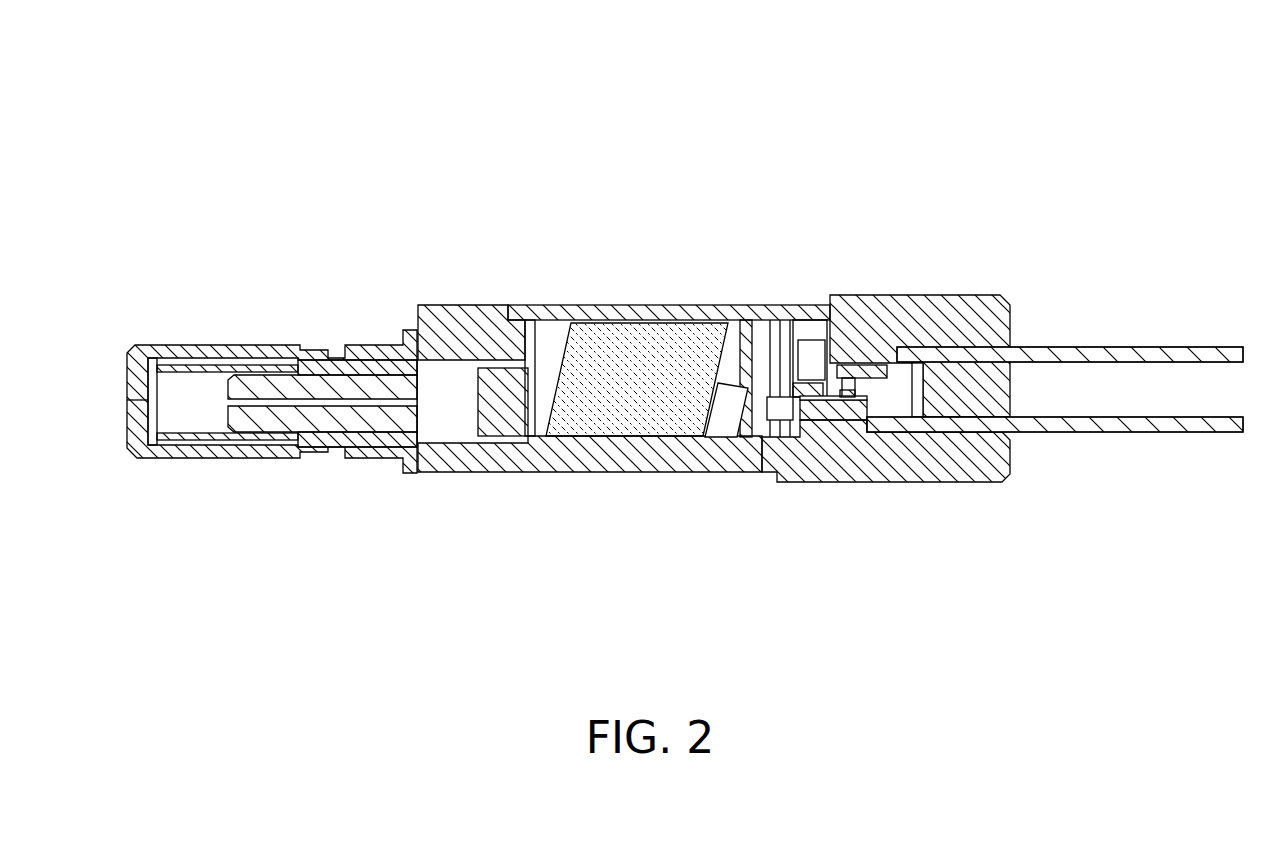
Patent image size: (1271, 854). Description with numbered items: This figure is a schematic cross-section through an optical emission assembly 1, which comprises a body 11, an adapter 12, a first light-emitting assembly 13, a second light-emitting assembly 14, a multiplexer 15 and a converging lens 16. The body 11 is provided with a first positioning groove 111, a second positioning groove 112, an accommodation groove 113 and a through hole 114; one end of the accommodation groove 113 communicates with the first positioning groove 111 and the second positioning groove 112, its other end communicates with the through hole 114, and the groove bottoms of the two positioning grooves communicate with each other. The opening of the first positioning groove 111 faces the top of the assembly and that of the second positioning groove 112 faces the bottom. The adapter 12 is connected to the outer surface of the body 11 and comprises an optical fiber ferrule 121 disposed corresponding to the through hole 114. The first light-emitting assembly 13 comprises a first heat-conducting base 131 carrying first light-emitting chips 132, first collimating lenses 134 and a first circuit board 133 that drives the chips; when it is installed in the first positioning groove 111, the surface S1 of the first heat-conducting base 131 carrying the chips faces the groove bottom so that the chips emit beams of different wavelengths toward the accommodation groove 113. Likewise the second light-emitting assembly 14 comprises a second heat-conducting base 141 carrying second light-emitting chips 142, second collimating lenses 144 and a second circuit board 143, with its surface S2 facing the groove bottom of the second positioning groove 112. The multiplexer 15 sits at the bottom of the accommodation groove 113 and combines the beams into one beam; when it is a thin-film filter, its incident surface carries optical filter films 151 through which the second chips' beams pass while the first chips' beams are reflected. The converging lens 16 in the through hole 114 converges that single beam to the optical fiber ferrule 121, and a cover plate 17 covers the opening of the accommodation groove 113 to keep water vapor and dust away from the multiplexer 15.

The optical emission assembly 1 is at (76, 66).
The body 11 is at (448, 310).
The first positioning groove 111 is at (848, 306).
The second positioning groove 112 is at (786, 438).
The accommodation groove 113 is at (557, 330).
The through hole 114 is at (512, 440).
The adapter 12 is at (215, 345).
The optical fiber ferrule 121 is at (343, 382).
The first light-emitting assembly 13 is at (1084, 258).
The first heat-conducting base 131 is at (943, 307).
The first light-emitting chip 132 is at (860, 366).
The first circuit board 133 is at (1093, 352).
The first collimating lens 134 is at (810, 342).
The second light-emitting assembly 14 is at (1082, 533).
The second heat-conducting base 141 is at (890, 472).
The second light-emitting chip 142 is at (868, 414).
The second circuit board 143 is at (1087, 428).
The second collimating lens 144 is at (828, 422).
The multiplexer 15 is at (634, 424).
The optical filter film 151 is at (724, 414).
The converging lens 16 is at (496, 424).
The cover plate 17 is at (650, 305).
The surface of the first heat-conducting base S1 is at (970, 352).
The surface of the second heat-conducting base S2 is at (952, 425).